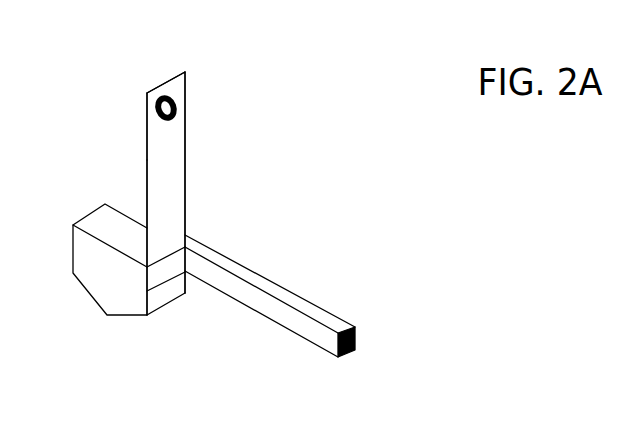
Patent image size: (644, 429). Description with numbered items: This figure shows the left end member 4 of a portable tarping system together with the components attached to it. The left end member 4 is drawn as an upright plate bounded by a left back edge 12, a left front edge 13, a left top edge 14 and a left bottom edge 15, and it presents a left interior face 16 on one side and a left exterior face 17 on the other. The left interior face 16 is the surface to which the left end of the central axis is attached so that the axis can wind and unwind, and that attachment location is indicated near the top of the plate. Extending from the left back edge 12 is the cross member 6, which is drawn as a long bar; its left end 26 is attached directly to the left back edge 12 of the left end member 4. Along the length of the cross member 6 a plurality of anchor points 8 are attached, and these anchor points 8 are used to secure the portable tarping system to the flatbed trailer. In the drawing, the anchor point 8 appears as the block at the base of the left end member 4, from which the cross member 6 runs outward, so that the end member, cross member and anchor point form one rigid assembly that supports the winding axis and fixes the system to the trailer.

The left end member 4 is at (186, 120).
The cross member 6 is at (317, 354).
The anchor points 8 is at (100, 315).
The left back edge 12 is at (196, 143).
The left front edge 13 is at (137, 183).
The left top edge 14 is at (172, 68).
The left bottom edge 15 is at (167, 269).
The left interior face 16 is at (186, 179).
The left exterior face 17 is at (137, 131).
The left end of the cross member 26 is at (190, 277).